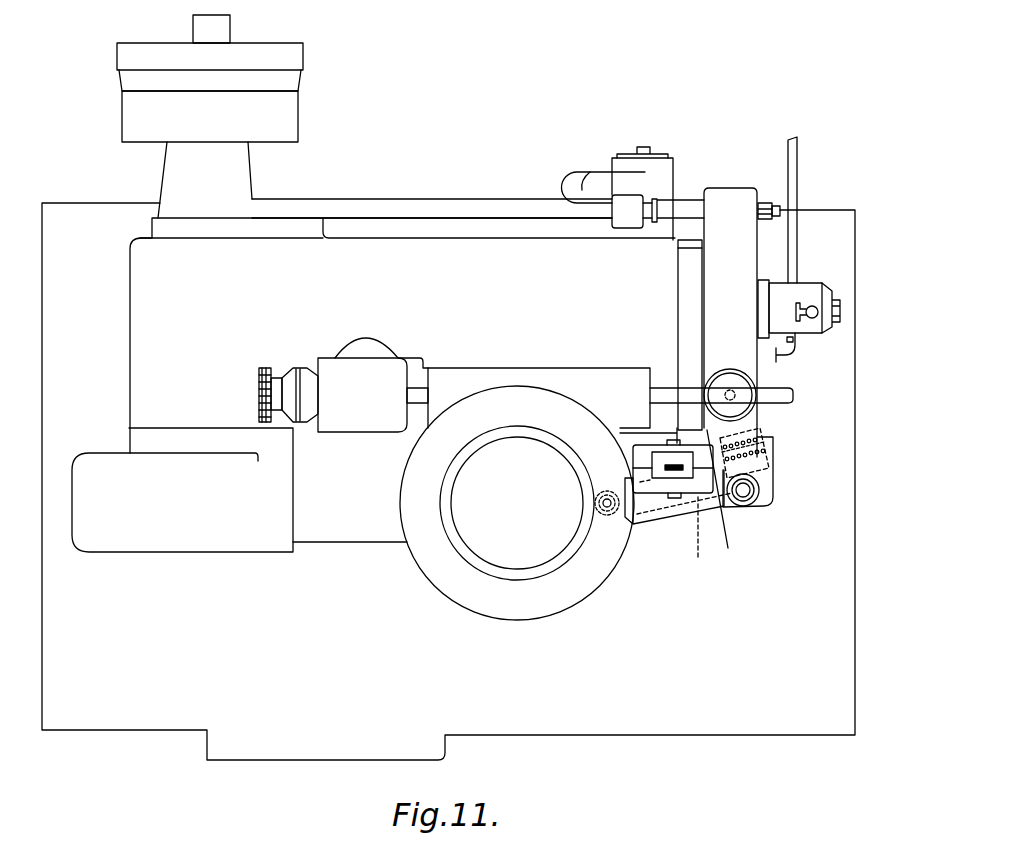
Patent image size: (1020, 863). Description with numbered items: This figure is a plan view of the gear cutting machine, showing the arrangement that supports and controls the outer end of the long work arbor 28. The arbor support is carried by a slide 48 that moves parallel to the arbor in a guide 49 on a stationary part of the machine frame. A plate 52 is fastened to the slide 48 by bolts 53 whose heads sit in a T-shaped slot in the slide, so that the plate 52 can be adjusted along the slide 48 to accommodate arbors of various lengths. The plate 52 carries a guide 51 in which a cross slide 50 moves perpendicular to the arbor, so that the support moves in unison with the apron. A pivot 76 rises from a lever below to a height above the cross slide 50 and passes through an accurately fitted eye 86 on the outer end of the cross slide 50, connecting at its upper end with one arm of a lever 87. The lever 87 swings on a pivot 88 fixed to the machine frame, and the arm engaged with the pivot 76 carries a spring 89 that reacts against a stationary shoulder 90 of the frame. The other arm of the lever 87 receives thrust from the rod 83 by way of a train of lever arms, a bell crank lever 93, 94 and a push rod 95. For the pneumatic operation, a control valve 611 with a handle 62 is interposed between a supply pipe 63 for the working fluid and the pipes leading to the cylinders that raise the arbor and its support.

The rod 83 is at (432, 205).
The bell crank lever 93 is at (580, 185).
The bell crank lever 94 is at (622, 212).
The push rod 95 is at (680, 205).
The supply pipe 63 is at (793, 188).
The lever 87 is at (729, 322).
The control valve 611 is at (803, 293).
The handle 62 is at (815, 320).
The pivot 88 is at (712, 386).
The slide 48 is at (657, 453).
The stationary shoulder 90 is at (696, 458).
The spring 89 is at (775, 433).
The bolts 53 is at (655, 467).
The guide 49 is at (640, 470).
The eye 86 is at (771, 495).
The pivot 76 is at (749, 493).
The arbor 28 is at (612, 514).
The plate 52 is at (660, 492).
The cross slide 50 is at (702, 538).
The guide 51 is at (729, 501).